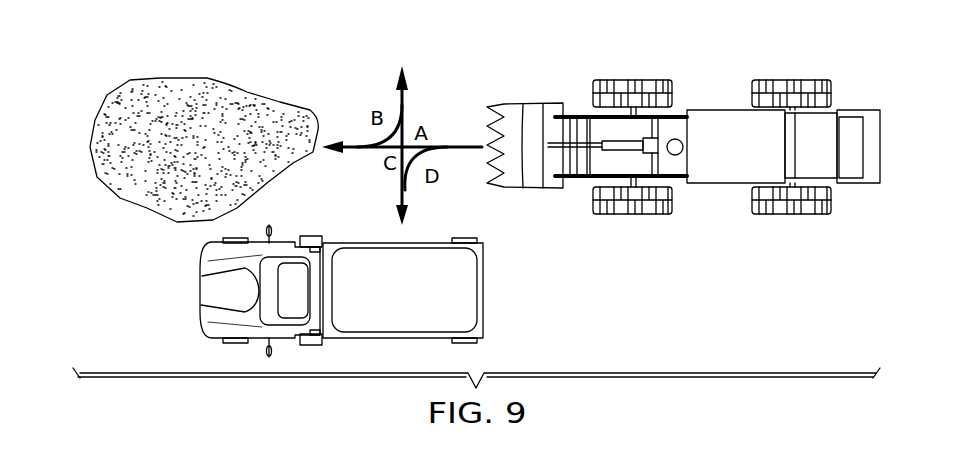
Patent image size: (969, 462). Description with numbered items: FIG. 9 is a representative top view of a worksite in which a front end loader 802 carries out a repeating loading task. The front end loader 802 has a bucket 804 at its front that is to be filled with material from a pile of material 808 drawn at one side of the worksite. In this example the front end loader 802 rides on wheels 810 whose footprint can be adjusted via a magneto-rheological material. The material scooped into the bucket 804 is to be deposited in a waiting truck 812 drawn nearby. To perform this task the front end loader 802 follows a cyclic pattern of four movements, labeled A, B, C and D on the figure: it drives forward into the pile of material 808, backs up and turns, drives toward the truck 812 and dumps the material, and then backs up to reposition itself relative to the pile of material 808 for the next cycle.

The front end loader 802 is at (707, 110).
The bucket 804 is at (532, 103).
The pile of material 808 is at (183, 77).
The wheels 810 is at (633, 80).
The truck 812 is at (199, 292).